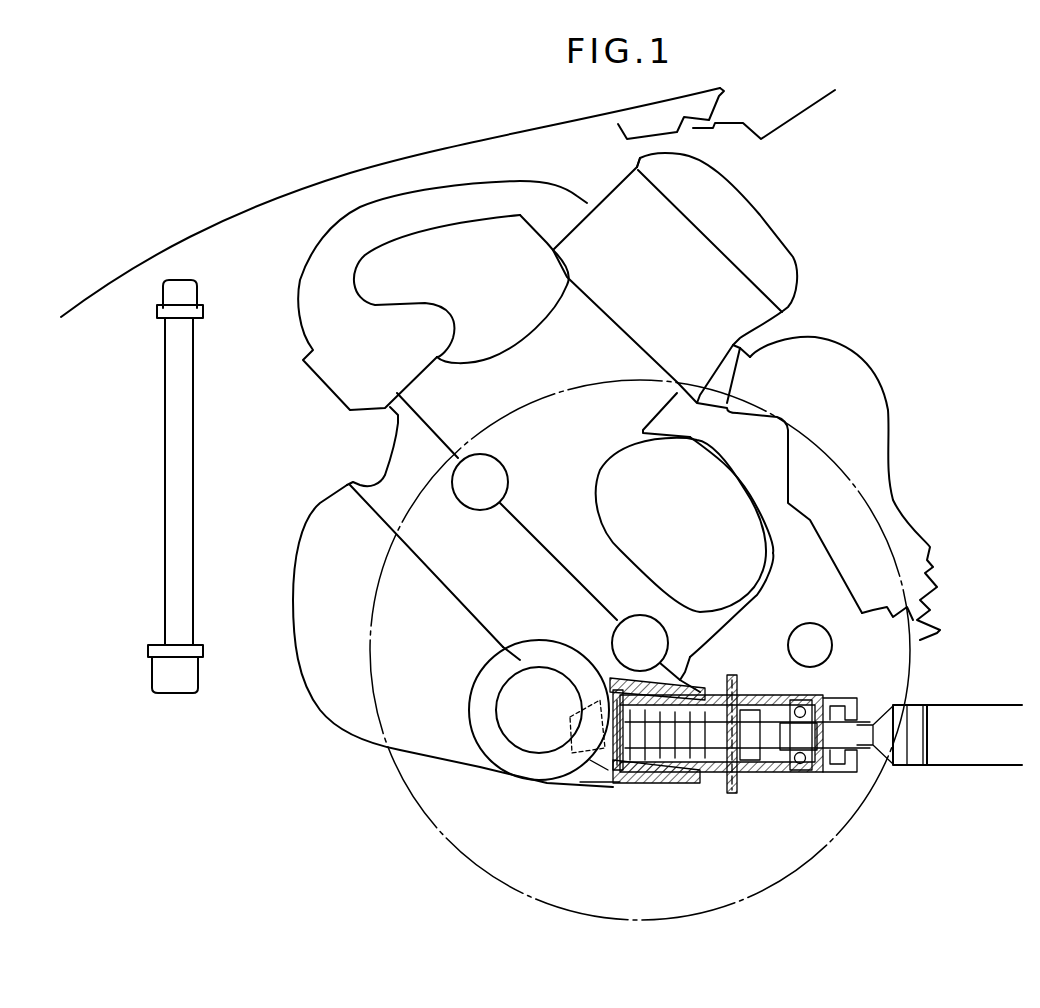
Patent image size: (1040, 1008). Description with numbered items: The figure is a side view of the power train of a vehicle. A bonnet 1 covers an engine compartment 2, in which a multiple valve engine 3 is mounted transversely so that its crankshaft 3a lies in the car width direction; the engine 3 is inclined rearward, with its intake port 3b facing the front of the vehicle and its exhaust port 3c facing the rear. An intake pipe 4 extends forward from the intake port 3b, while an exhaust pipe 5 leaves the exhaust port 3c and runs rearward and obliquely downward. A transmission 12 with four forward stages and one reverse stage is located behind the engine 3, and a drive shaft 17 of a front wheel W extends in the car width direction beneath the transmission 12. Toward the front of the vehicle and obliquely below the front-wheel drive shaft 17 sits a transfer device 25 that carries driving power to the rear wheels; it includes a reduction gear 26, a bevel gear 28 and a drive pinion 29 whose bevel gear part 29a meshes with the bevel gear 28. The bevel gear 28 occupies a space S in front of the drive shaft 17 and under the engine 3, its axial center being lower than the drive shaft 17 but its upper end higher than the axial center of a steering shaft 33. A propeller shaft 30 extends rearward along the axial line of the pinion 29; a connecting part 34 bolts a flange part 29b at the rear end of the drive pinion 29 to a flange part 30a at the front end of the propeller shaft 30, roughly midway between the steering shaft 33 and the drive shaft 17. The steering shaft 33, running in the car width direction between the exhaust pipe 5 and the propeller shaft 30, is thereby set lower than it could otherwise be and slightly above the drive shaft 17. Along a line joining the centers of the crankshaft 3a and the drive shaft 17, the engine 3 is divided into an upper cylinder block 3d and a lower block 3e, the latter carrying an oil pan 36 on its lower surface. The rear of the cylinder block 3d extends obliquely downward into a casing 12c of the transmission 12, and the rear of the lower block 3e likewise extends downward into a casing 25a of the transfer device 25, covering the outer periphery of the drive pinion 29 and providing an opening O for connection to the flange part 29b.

The bonnet 1 is at (352, 173).
The engine compartment 2 is at (267, 287).
The multiple valve engine 3 is at (753, 193).
The crankshaft 3a is at (473, 508).
The intake port 3b is at (608, 243).
The exhaust port 3c is at (693, 340).
The cylinder block 3d is at (530, 340).
The lower block 3e is at (395, 460).
The intake pipe 4 is at (432, 189).
The exhaust pipe 5 is at (877, 437).
The transmission 12 is at (693, 438).
The casing of the transmission 12c is at (727, 458).
The drive shaft 17 is at (668, 631).
The transfer device 25 is at (568, 775).
The casing of the transfer device 25a is at (667, 785).
The reduction gear 26 is at (530, 667).
The bevel gear 28 is at (557, 640).
The drive pinion 29 is at (700, 762).
The bevel gear part 29a is at (613, 775).
The flange part 29b is at (722, 790).
The propeller shaft 30 is at (965, 750).
The flange part 30a is at (740, 780).
The steering shaft 33 is at (835, 635).
The connecting part 34 is at (760, 853).
The oil pan 36 is at (453, 767).
The space S is at (458, 708).
The front wheel W is at (398, 770).
The opening O is at (720, 662).